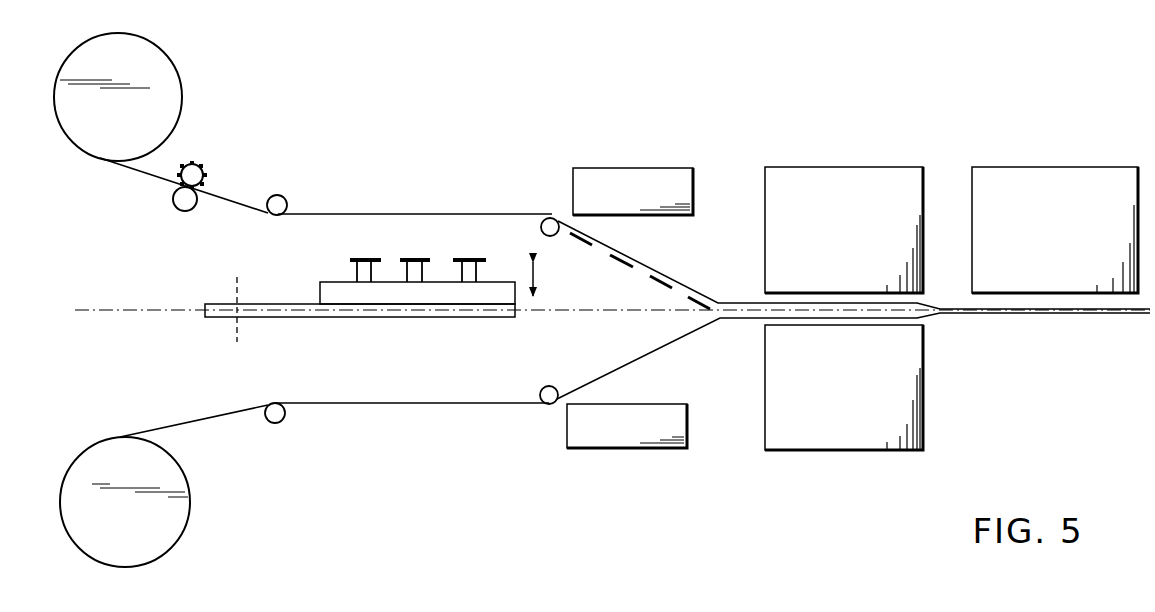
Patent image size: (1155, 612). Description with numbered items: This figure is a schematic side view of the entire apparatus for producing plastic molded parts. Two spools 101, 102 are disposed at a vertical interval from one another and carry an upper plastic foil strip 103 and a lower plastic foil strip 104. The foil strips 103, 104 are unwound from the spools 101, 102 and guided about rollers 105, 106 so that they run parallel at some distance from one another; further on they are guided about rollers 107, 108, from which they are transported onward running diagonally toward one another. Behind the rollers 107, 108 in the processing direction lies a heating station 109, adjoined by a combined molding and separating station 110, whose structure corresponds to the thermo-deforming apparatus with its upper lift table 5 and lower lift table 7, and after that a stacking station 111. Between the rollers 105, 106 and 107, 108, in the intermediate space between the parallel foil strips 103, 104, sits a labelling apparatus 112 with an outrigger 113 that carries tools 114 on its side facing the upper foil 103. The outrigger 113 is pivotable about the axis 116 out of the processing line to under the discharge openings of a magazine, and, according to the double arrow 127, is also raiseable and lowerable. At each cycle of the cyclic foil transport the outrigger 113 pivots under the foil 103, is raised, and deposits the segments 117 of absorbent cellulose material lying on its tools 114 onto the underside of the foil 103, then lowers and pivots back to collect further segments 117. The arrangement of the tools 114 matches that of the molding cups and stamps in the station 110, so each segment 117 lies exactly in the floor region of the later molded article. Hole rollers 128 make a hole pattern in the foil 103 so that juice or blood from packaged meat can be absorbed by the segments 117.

The upper lift table 5 is at (843, 178).
The lower lift table 7 is at (841, 433).
The spool 101 is at (158, 66).
The spool 102 is at (175, 527).
The upper plastic foil strip 103 is at (224, 198).
The lower plastic foil strip 104 is at (221, 417).
The roller 105 is at (284, 207).
The roller 106 is at (285, 419).
The roller 107 is at (551, 218).
The roller 108 is at (549, 391).
The heating station 109 is at (642, 187).
The molding and separating station 110 is at (924, 151).
The stacking station 111 is at (1037, 183).
The labelling apparatus 112 is at (447, 323).
The outrigger 113 is at (380, 314).
The tools 114 is at (470, 254).
The axis 116 is at (237, 340).
The segments 117 is at (653, 277).
The double arrow 127 is at (538, 281).
The hole rollers 128 is at (192, 163).